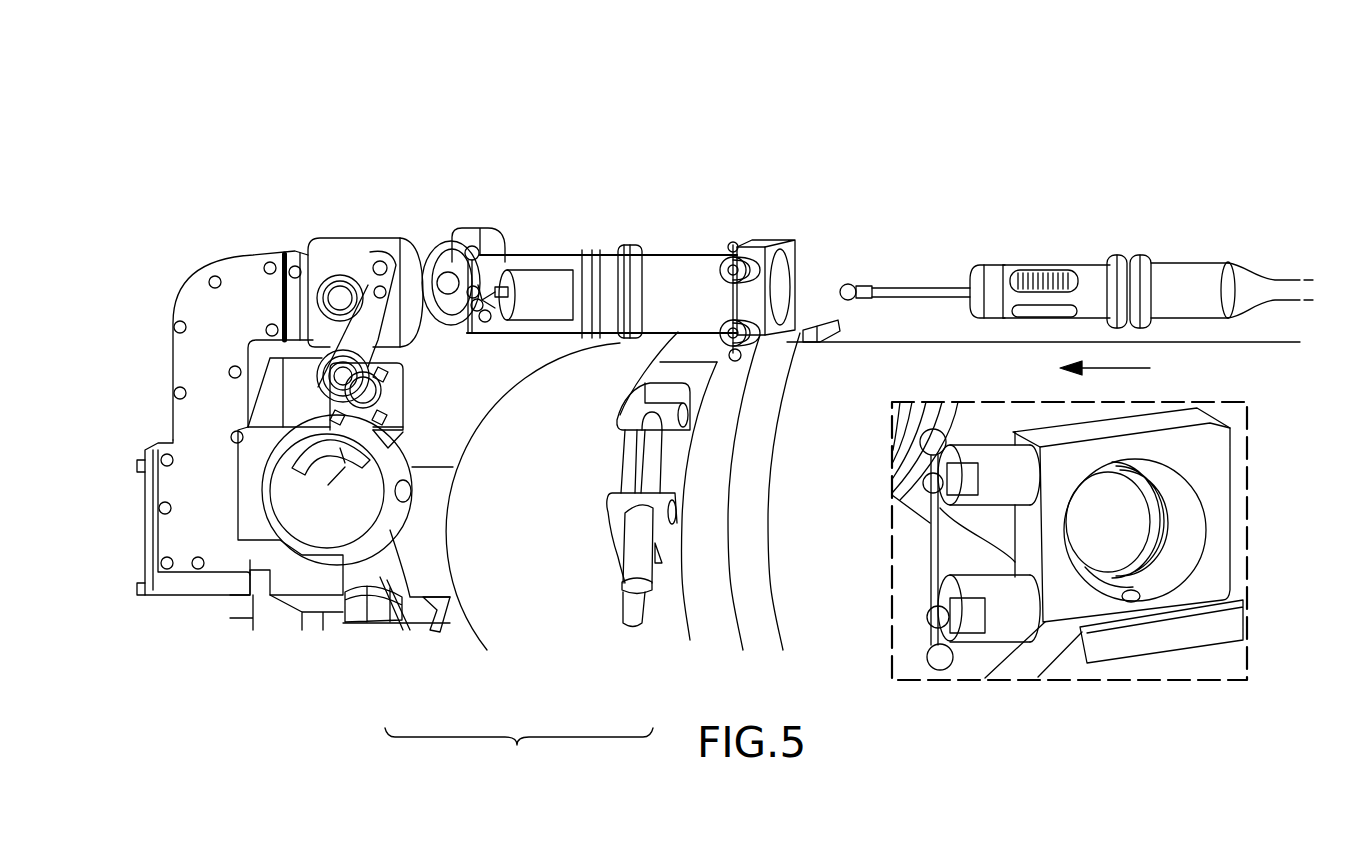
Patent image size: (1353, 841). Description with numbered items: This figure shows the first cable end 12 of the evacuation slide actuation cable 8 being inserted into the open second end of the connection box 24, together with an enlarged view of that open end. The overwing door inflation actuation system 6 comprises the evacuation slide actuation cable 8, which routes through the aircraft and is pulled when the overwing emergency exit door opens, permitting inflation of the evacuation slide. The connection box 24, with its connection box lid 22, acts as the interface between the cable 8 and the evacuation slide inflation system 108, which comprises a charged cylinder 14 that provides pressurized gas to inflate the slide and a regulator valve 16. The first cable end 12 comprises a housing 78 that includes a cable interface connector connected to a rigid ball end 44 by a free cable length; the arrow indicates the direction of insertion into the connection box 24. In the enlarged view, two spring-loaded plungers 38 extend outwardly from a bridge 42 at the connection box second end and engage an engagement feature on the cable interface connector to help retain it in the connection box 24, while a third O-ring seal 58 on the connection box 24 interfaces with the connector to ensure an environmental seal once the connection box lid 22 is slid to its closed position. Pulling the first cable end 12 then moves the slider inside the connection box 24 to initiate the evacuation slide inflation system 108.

The overwing door inflation actuation system 6 is at (212, 240).
The evacuation slide actuation cable 8 is at (1143, 158).
The first cable end 12 is at (963, 250).
The charged cylinder 14 is at (590, 603).
The regulator valve 16 is at (380, 580).
The connection box lid 22 is at (358, 237).
The connection box 24 is at (542, 250).
The spring-loaded plungers 38 is at (972, 442).
The bridge 42 is at (1217, 452).
The rigid ball end 44 is at (848, 284).
The third O-ring seal 58 is at (1143, 565).
The housing 78 is at (1276, 275).
The evacuation slide inflation system 108 is at (519, 755).